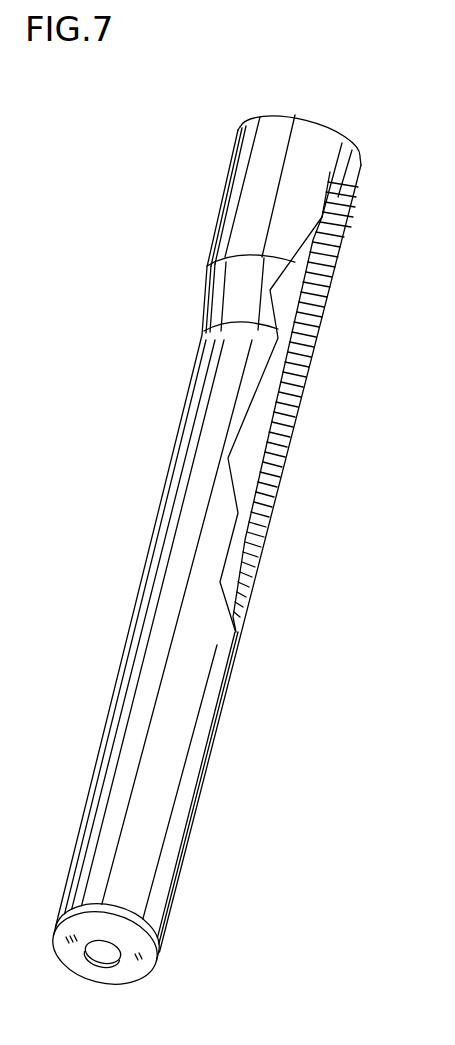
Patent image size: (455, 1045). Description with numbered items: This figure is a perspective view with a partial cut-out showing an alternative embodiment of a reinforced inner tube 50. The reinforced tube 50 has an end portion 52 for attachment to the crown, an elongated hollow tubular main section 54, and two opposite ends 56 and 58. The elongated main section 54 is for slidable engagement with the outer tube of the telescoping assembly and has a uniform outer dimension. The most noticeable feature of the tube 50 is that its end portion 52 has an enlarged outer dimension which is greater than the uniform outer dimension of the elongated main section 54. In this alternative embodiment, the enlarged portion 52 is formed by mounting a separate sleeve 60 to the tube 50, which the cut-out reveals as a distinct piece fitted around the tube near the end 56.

The reinforced inner tube 50 is at (100, 438).
The end portion 52 is at (238, 183).
The elongated hollow tubular main section 54 is at (217, 735).
The end 56 is at (274, 112).
The end 58 is at (130, 977).
The sleeve 60 is at (346, 234).